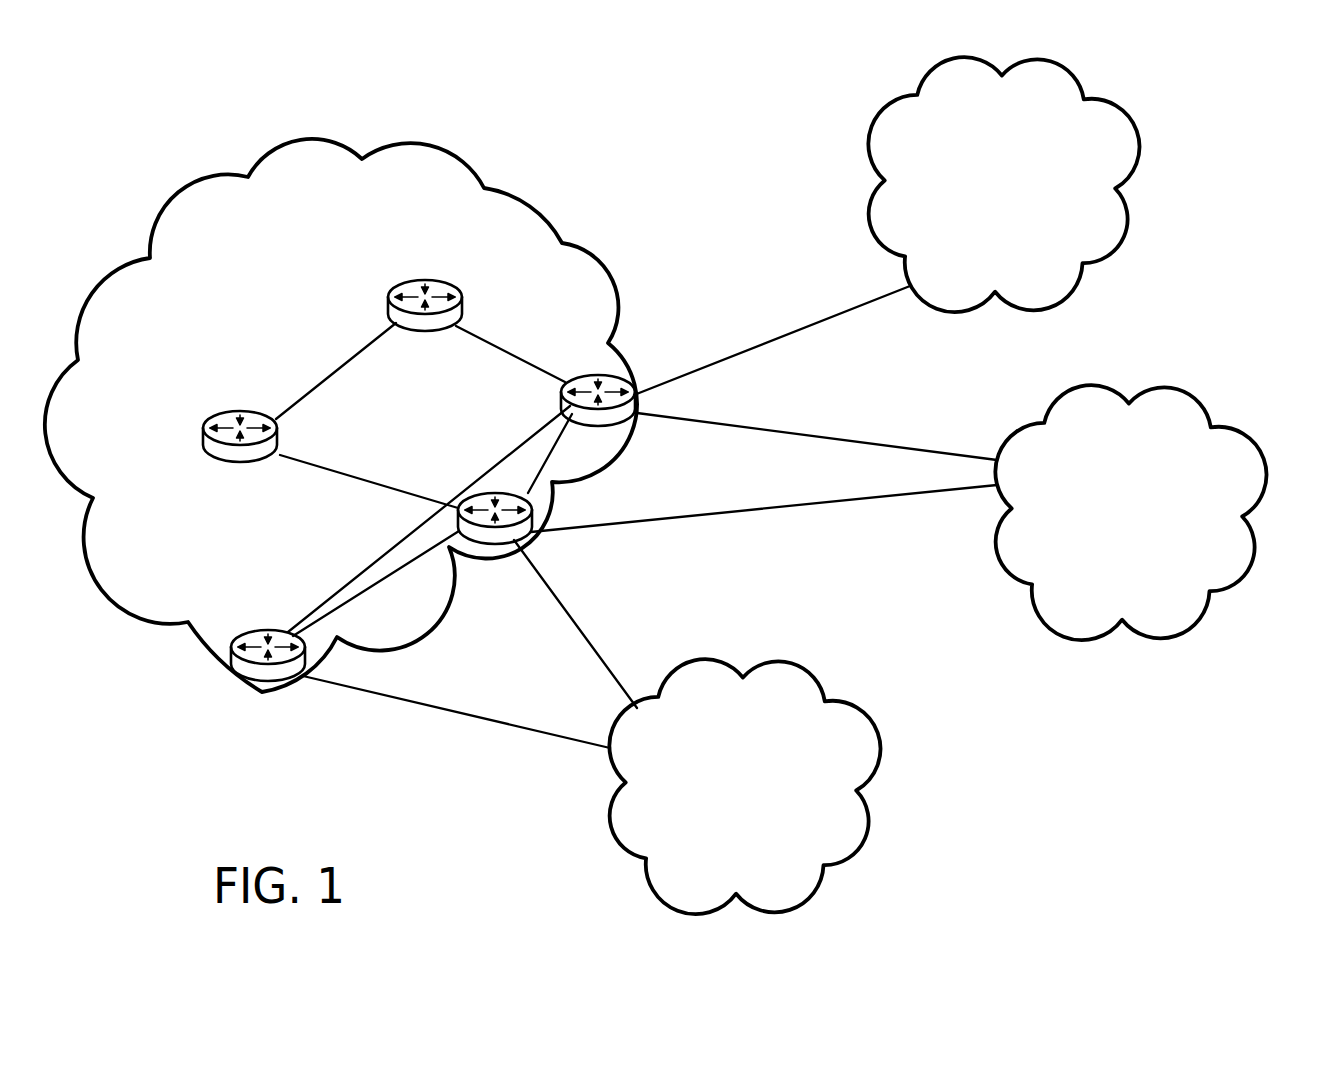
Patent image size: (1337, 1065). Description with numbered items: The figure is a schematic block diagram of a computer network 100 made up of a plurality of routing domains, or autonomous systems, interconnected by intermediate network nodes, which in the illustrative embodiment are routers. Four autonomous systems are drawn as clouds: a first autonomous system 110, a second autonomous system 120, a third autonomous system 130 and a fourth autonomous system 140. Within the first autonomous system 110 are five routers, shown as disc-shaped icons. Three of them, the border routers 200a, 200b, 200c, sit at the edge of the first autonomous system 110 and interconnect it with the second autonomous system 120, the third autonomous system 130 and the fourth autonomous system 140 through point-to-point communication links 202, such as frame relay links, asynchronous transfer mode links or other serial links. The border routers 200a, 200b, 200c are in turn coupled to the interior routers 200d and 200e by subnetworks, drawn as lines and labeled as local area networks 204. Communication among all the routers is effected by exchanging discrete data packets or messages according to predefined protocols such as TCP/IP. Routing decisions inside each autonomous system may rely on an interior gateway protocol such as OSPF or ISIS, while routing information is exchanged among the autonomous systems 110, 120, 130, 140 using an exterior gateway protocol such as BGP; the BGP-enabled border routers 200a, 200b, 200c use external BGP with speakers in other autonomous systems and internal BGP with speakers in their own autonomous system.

The computer network 100 is at (1218, 110).
The autonomous system AS1 110 is at (262, 286).
The autonomous system AS2 120 is at (1029, 203).
The autonomous system AS3 130 is at (1141, 538).
The autonomous system AS4 140 is at (759, 795).
The border router 200a is at (510, 540).
The border router 200b is at (259, 630).
The border router 200c is at (597, 375).
The router 200d is at (425, 280).
The router 200e is at (241, 411).
The point-to-point communication links 202 is at (740, 351).
The local area networks 204 is at (344, 377).